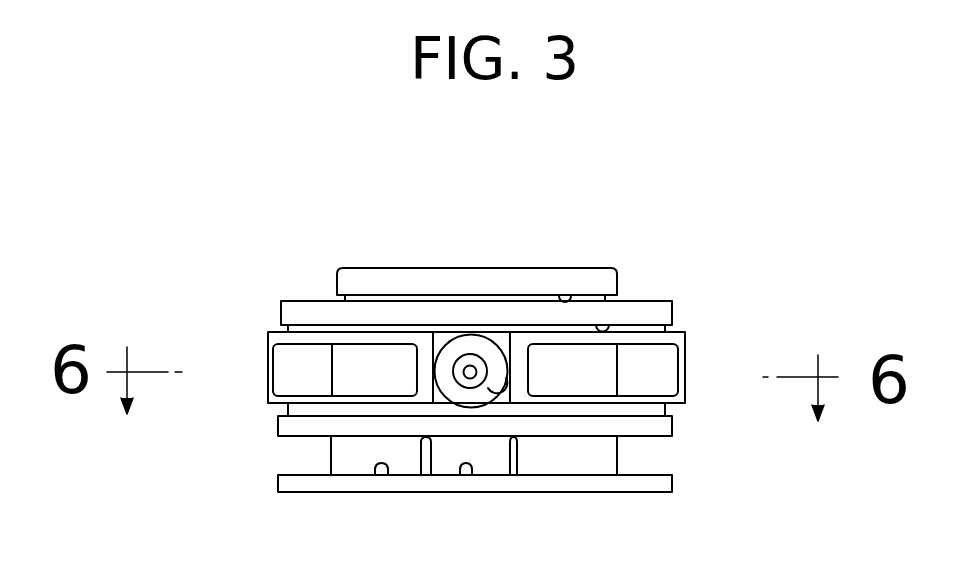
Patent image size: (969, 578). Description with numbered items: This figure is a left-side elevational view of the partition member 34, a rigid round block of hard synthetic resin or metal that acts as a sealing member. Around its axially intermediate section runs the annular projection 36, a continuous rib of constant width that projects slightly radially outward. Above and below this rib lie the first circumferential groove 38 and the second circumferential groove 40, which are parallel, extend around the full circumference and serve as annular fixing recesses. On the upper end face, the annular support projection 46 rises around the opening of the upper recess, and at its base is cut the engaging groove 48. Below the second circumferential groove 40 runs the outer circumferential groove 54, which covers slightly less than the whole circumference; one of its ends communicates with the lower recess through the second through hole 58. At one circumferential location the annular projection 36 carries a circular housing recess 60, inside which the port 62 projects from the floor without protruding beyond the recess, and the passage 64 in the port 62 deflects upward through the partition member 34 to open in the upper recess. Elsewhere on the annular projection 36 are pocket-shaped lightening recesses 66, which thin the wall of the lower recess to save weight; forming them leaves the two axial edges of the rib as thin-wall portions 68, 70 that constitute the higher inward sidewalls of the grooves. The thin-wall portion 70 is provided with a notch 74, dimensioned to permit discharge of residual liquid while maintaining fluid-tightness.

The partition member 34 is at (314, 245).
The annular projection 36 is at (585, 402).
The first circumferential groove 38 is at (610, 330).
The second circumferential groove 40 is at (360, 412).
The annular support projection 46 is at (403, 282).
The engaging groove 48 is at (575, 298).
The outer circumferential groove 54 is at (376, 475).
The second through hole 58 is at (472, 476).
The housing recess 60 is at (488, 400).
The port 62 is at (450, 383).
The passage 64 is at (445, 398).
The lightening recesses 66 is at (357, 347).
The thin-wall portion 68 is at (320, 338).
The thin-wall portion 70 is at (633, 402).
The notch 74 is at (456, 333).